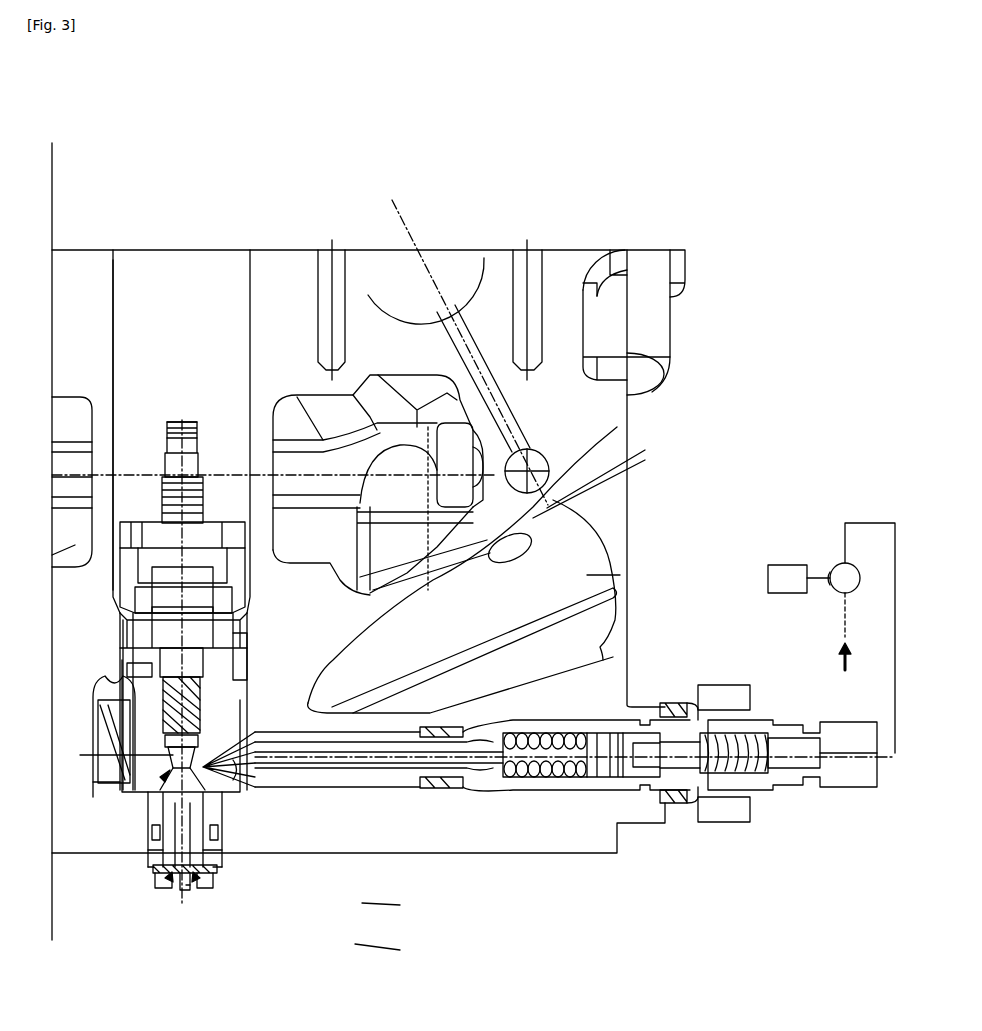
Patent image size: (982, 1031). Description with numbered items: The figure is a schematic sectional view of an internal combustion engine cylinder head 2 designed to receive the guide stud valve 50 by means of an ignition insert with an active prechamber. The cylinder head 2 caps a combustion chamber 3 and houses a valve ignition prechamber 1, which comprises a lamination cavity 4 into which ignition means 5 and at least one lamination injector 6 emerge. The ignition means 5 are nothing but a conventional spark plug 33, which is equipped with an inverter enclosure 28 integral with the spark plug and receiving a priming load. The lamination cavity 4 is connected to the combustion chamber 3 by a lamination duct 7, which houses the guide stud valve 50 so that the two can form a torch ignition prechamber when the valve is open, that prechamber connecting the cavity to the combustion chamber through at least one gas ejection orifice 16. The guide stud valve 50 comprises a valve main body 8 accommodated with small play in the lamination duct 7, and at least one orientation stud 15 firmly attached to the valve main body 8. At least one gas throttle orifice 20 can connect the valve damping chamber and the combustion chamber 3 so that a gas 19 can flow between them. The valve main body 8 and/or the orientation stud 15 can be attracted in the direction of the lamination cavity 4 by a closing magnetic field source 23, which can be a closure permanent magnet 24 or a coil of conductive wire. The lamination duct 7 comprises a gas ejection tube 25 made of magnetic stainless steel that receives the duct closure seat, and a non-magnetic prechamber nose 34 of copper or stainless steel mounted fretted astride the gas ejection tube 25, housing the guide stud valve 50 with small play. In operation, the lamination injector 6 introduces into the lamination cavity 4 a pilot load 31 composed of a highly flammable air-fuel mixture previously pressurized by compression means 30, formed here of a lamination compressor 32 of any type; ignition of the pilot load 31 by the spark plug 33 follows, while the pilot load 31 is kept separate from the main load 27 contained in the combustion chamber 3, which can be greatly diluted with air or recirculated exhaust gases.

The valve ignition prechamber 1 is at (140, 800).
The internal combustion engine cylinder head 2 is at (597, 258).
The combustion chamber 3 is at (360, 900).
The lamination cavity 4 is at (173, 763).
The ignition means 5 is at (176, 407).
The lamination injector 6 is at (586, 706).
The lamination duct 7 is at (180, 840).
The valve main body 8 is at (172, 877).
The orientation stud 15 is at (177, 890).
The gas ejection orifice 16 is at (228, 877).
The gas 19 is at (180, 790).
The gas throttle orifice 20 is at (200, 880).
The closing magnetic field source 23 is at (233, 515).
The closure permanent magnet 24 is at (132, 533).
The gas ejection tube 25 is at (203, 850).
The main load 27 is at (352, 943).
The inverter enclosure 28 is at (205, 742).
The compression means 30 is at (822, 548).
The pilot load 31 is at (203, 760).
The lamination compressor 32 is at (842, 585).
The spark plug 33 is at (193, 430).
The non-magnetic prechamber nose 34 is at (162, 880).
The guide stud valve 50 is at (213, 890).